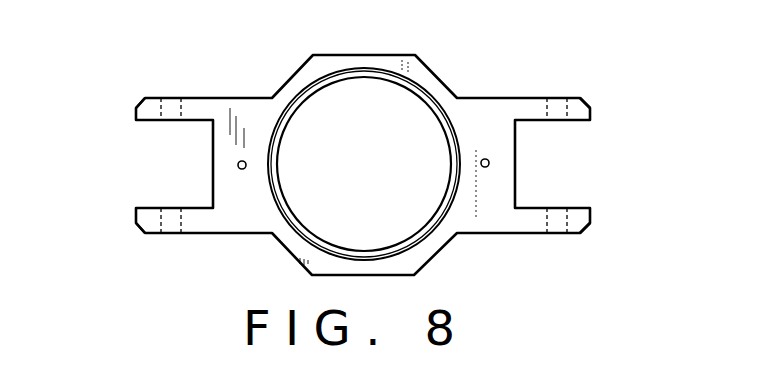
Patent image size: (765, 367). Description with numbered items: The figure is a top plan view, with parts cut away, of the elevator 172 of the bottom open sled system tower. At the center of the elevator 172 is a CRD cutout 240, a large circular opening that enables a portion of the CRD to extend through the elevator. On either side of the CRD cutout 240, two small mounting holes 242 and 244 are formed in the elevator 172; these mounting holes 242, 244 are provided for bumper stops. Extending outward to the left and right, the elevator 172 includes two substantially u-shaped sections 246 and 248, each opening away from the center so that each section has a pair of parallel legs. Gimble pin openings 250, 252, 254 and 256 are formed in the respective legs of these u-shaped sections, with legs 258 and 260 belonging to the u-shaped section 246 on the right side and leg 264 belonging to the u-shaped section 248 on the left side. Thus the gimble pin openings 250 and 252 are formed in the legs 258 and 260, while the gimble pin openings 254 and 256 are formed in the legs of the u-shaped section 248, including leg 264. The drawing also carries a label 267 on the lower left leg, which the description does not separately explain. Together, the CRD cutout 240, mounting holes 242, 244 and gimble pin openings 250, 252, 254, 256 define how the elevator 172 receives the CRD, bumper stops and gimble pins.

The elevator 172 is at (477, 117).
The CRD cutout 240 is at (418, 95).
The mounting hole 242 is at (244, 169).
The mounting hole 244 is at (489, 163).
The u-shaped section 246 is at (600, 97).
The u-shaped section 248 is at (128, 94).
The gimble pin opening 250 is at (568, 108).
The gimble pin opening 252 is at (576, 222).
The gimble pin opening 254 is at (181, 222).
The gimble pin opening 256 is at (181, 110).
The leg 258 is at (580, 97).
The leg 260 is at (589, 223).
The leg 264 is at (136, 114).
The left lower chamfered tip 267 is at (137, 226).